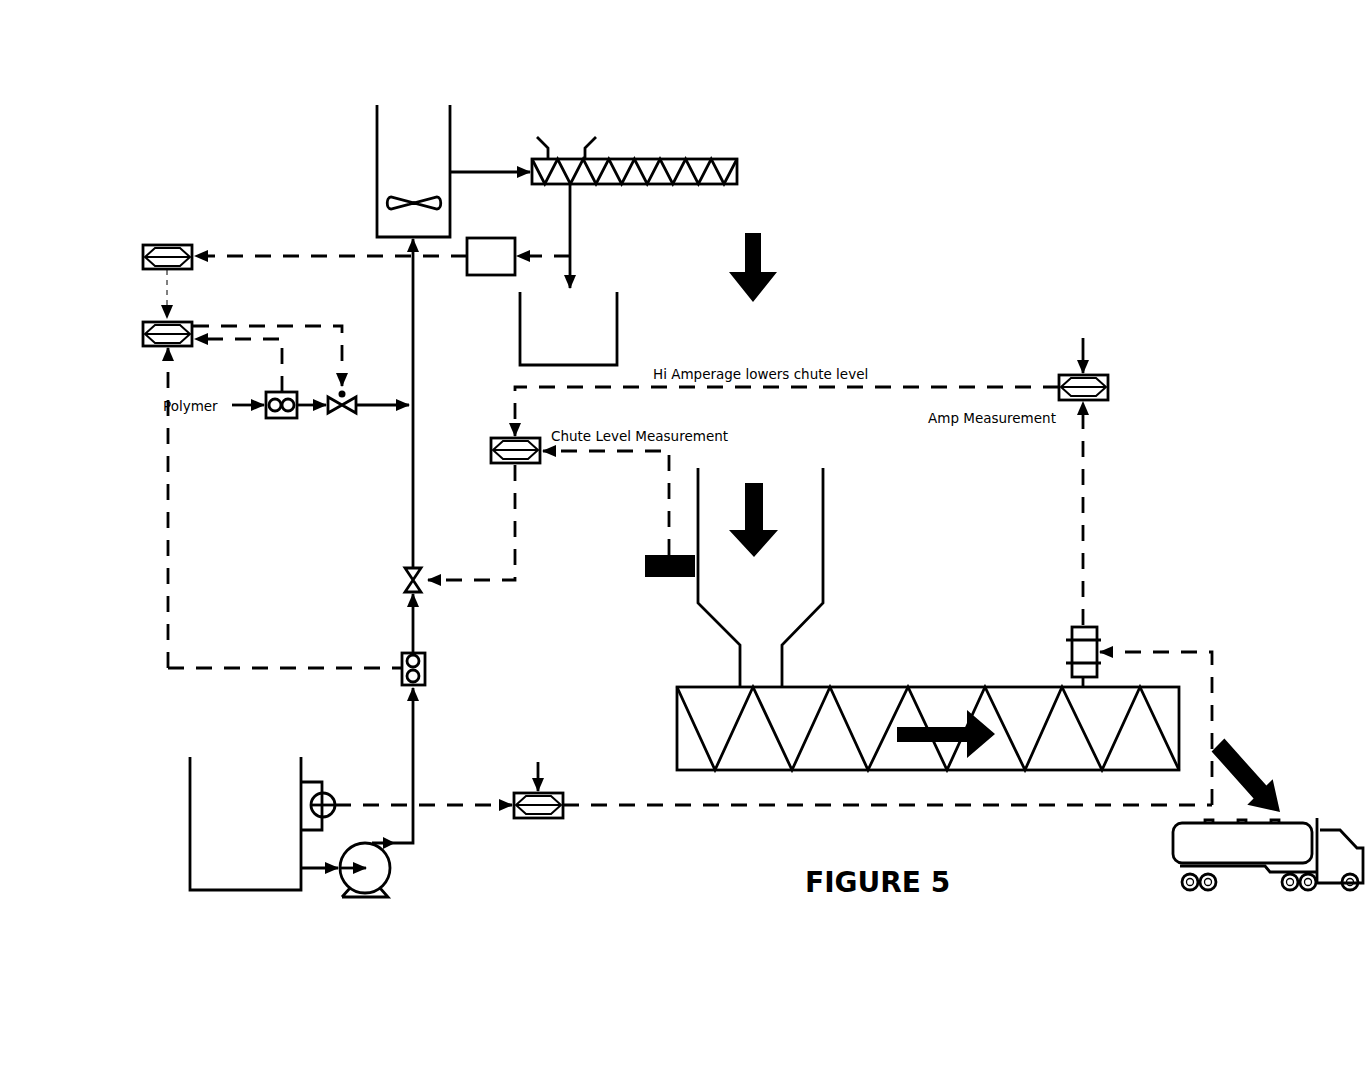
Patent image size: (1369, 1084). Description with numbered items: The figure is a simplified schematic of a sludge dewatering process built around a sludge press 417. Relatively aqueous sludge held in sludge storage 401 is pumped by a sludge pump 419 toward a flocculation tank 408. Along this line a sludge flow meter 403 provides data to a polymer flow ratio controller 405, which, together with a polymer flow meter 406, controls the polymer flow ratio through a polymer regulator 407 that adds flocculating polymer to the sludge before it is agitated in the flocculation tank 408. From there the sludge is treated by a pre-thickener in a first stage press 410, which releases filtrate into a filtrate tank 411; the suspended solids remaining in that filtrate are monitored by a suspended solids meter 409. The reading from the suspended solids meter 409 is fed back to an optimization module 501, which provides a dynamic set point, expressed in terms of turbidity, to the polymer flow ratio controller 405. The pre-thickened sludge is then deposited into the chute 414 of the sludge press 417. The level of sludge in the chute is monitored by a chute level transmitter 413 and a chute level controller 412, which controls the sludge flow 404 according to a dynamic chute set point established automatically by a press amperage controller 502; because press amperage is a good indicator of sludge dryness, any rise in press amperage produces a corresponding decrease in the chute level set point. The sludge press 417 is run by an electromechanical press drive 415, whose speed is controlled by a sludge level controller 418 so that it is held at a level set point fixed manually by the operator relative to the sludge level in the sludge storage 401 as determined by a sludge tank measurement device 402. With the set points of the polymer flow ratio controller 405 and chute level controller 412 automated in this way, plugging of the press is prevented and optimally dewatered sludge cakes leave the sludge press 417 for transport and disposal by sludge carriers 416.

The sludge storage 401 is at (188, 780).
The sludge tank measurement device 402 is at (338, 793).
The sludge flow meter 403 is at (399, 649).
The sludge flow 404 is at (400, 578).
The polymer flow ratio controller 405 is at (157, 349).
The polymer flow meter 406 is at (268, 390).
The polymer regulator 407 is at (338, 419).
The flocculation tank 408 is at (374, 190).
The suspended solids meter 409 is at (469, 236).
The first stage press 410 is at (647, 156).
The filtrate tank 411 is at (622, 315).
The chute level controller 412 is at (531, 437).
The chute level transmitter 413 is at (682, 579).
The chute 414 is at (828, 577).
The press drive 415 is at (1098, 623).
The sludge carriers 416 is at (1306, 817).
The sludge press 417 is at (779, 773).
The sludge level controller 418 is at (557, 791).
The sludge pump 419 is at (394, 882).
The optimization module 501 is at (147, 244).
The press amperage controller 502 is at (1101, 370).